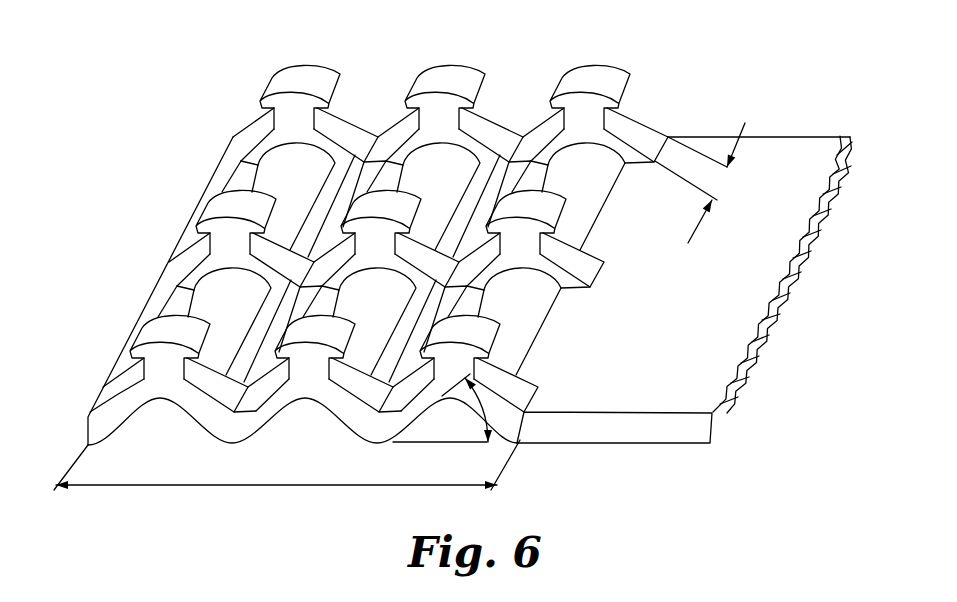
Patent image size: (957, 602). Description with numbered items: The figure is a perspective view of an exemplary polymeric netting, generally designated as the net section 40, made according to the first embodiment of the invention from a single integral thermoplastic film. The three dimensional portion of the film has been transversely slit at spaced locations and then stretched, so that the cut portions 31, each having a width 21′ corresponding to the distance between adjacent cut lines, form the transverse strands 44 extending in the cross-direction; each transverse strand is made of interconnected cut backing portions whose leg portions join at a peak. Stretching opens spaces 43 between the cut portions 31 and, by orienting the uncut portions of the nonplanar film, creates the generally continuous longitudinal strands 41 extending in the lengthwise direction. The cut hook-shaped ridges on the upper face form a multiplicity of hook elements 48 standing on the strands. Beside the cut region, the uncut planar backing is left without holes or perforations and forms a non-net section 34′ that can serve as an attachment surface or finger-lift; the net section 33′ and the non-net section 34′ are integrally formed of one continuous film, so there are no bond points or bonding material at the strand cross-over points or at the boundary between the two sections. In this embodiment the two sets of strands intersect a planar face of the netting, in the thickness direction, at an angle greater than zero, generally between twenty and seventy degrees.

The net section 40 is at (445, 50).
The hook elements 48 is at (608, 68).
The transverse strands 44 is at (547, 150).
The cut portions 31 is at (642, 130).
The spaces 43 is at (600, 188).
The longitudinal strands 41 is at (258, 362).
The non-net section 34′ is at (790, 145).
The net section 33′ is at (287, 459).
The width of the cut portions 21′ is at (700, 232).